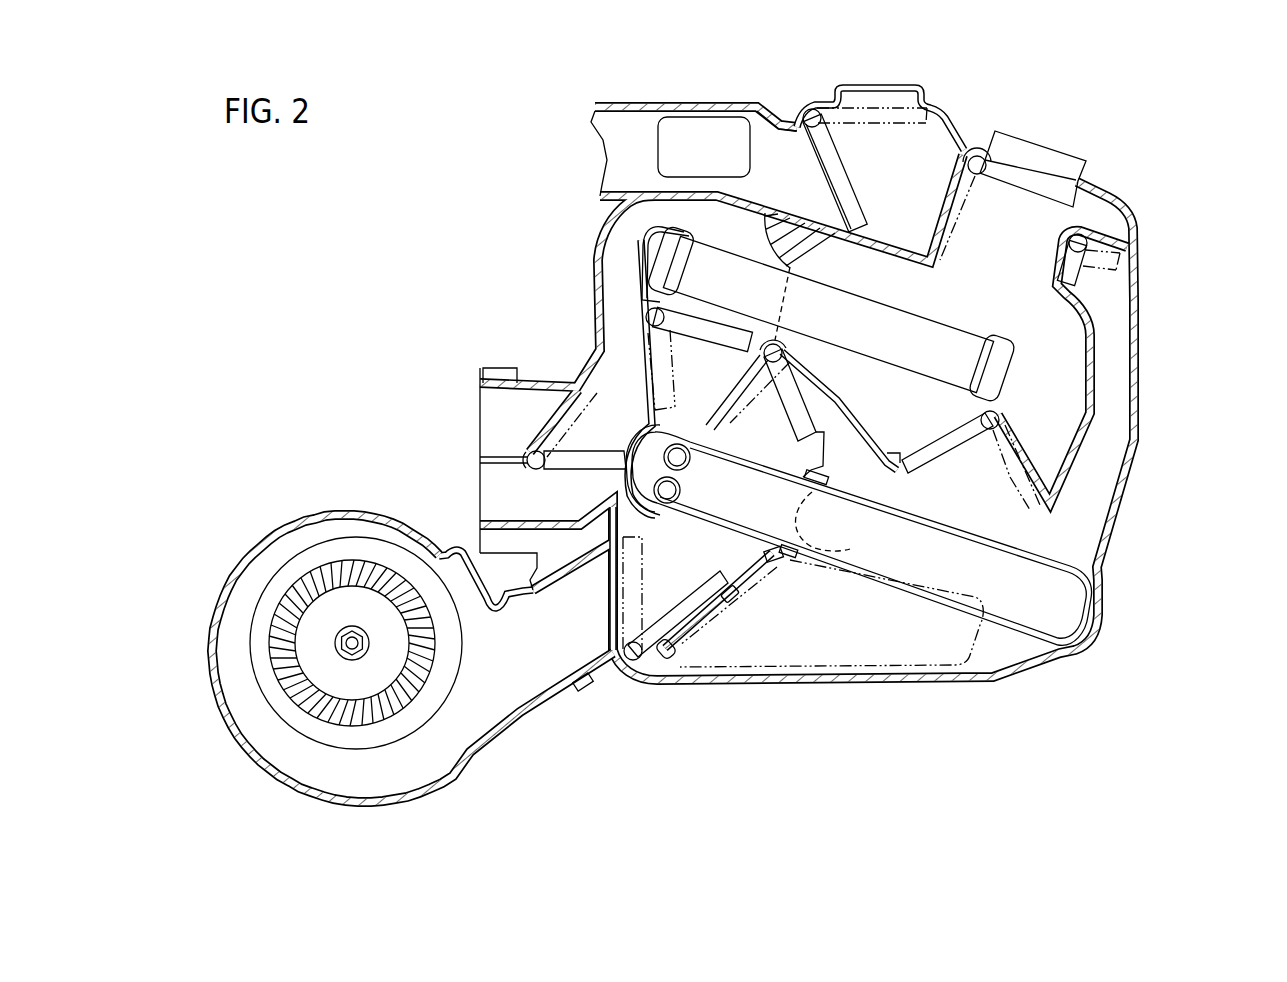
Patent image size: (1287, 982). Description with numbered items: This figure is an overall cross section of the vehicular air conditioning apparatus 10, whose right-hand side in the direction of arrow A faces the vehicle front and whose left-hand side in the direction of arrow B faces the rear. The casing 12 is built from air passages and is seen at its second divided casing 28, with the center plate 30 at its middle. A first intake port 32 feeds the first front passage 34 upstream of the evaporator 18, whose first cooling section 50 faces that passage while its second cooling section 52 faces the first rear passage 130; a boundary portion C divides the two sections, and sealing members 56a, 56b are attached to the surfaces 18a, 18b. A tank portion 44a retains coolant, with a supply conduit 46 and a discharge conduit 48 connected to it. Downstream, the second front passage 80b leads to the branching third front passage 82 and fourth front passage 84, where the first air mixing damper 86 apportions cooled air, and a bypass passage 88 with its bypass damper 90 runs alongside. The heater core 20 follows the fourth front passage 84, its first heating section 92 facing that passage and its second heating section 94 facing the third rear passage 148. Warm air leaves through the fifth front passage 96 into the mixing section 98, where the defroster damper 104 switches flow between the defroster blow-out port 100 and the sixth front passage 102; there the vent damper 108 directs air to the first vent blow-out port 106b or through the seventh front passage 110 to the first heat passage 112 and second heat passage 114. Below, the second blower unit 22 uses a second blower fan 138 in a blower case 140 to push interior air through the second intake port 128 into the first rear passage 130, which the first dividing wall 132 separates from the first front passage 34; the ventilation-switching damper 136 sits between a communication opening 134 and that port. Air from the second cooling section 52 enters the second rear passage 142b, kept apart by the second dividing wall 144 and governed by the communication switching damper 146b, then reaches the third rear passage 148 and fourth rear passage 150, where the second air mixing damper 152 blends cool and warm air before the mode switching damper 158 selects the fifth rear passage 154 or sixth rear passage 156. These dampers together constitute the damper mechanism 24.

The vehicular air conditioning apparatus 10 is at (1140, 103).
The casing 12 is at (1147, 205).
The evaporator 18 is at (955, 517).
The surface of the evaporator 18a is at (902, 592).
The another surface of the evaporator 18b is at (1044, 557).
The heater core 20 is at (877, 302).
The second blower unit 22 is at (268, 778).
The damper mechanism 24 is at (633, 306).
The second divided casing 28 is at (1142, 413).
The center plate 30 is at (1065, 351).
The first intake port 32 is at (831, 686).
The first front passage 34 is at (881, 650).
The tank portion 44a is at (1053, 618).
The supply conduit 46 is at (664, 443).
The discharge conduit 48 is at (668, 503).
The first cooling section 50 is at (880, 530).
The second cooling section 52 is at (711, 507).
The sealing member 56a is at (790, 562).
The sealing member 56b is at (833, 482).
The second front passage 80b is at (1000, 467).
The third front passage 82 is at (1060, 417).
The fourth front passage 84 is at (879, 376).
The first air mixing damper 86 is at (937, 446).
The bypass passage 88 is at (1113, 386).
The bypass damper 90 is at (1070, 265).
The first heating section 92 is at (953, 350).
The second heating section 94 is at (727, 266).
The fifth front passage 96 is at (876, 260).
The mixing section 98 is at (1027, 312).
The defroster blow-out port 100 is at (1047, 157).
The sixth front passage 102 is at (940, 150).
The defroster damper 104 is at (1005, 178).
The first vent blow-out port 106b is at (897, 98).
The vent damper 108 is at (840, 165).
The seventh front passage 110 is at (757, 124).
The first heat passage 112 is at (676, 131).
The second heat passage 114 is at (600, 135).
The second intake port 128 is at (588, 690).
The first rear passage 130 is at (742, 562).
The first dividing wall 132 is at (773, 565).
The communication opening 134 is at (682, 640).
The ventilation-switching damper 136 is at (682, 612).
The second blower fan 138 is at (428, 681).
The blower case 140 is at (291, 527).
The second rear passage 142b is at (752, 436).
The second dividing wall 144 is at (766, 331).
The communication switching damper 146b is at (795, 410).
The third rear passage 148 is at (600, 350).
The fourth rear passage 150 is at (615, 246).
The second air mixing damper 152 is at (702, 328).
The fifth rear passage 154 is at (492, 491).
The sixth rear passage 156 is at (492, 423).
The mode switching damper 158 is at (578, 462).
The arrow A is at (752, 779).
The arrow B is at (732, 779).
The boundary portion C is at (829, 526).